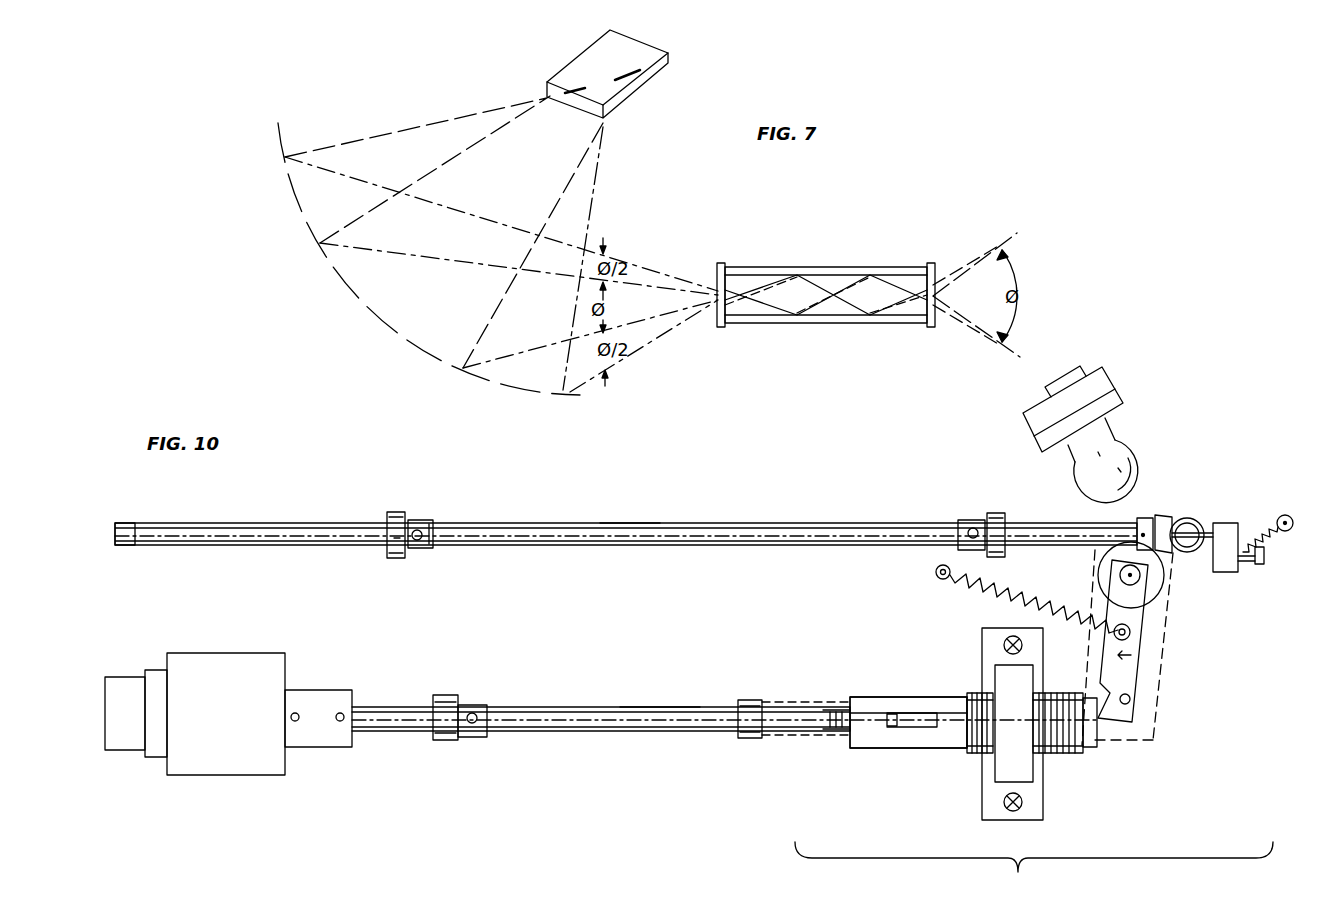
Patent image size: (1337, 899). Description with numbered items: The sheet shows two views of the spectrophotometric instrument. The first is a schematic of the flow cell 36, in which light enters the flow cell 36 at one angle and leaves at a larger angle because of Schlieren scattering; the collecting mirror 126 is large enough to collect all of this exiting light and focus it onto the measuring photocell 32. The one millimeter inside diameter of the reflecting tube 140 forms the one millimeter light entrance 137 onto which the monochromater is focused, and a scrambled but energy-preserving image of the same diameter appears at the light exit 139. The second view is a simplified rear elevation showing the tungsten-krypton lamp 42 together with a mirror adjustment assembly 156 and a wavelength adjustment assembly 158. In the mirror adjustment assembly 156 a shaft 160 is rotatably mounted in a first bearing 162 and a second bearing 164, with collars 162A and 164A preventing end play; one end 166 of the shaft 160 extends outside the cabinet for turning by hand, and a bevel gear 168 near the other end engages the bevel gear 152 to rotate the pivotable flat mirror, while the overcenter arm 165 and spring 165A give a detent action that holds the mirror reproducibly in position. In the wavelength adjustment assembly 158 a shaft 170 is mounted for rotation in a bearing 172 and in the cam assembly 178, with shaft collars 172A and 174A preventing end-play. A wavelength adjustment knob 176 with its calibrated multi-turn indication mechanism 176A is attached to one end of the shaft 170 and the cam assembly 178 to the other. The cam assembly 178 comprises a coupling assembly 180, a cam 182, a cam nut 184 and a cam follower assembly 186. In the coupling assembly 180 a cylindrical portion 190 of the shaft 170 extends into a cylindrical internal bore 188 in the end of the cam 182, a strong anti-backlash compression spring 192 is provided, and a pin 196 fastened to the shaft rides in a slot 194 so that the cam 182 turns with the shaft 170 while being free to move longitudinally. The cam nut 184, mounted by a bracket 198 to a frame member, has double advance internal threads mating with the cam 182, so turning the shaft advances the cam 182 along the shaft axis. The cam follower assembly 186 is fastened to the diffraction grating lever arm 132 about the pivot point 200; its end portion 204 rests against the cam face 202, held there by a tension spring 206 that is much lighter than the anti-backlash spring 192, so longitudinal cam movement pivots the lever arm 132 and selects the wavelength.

In FIG. 7, the measuring photocell 32 is at (677, 81).
In FIG. 7, the collecting mirror 126 is at (405, 340).
In FIG. 7, the flow cell 36 is at (848, 325).
In FIG. 7, the reflecting tube 140 is at (831, 267).
In FIG. 7, the light exit 139 is at (718, 272).
In FIG. 7, the light entrance 137 is at (935, 270).
In FIG. 10, the tungsten-krypton lamp 42 is at (1139, 460).
In FIG. 10, the end of shaft 166 is at (115, 527).
In FIG. 10, the first bearing 162 is at (393, 510).
In FIG. 10, the collar 162A is at (423, 519).
In FIG. 10, the mirror adjustment assembly 156 is at (628, 513).
In FIG. 10, the shaft 160 is at (713, 523).
In FIG. 10, the collar 164A is at (968, 518).
In FIG. 10, the second bearing 164 is at (1000, 513).
In FIG. 10, the bevel gear 168 is at (1150, 515).
In FIG. 10, the bevel gear 152 is at (1197, 520).
In FIG. 10, the spring 165A is at (1262, 522).
In FIG. 10, the overcenter arm 165 is at (1262, 565).
In FIG. 10, the tension spring 206 is at (1070, 593).
In FIG. 10, the pivot point 200 is at (1150, 582).
In FIG. 10, the diffraction grating lever arm 132 is at (1142, 652).
In FIG. 10, the cam follower assembly 186 is at (1145, 690).
In FIG. 10, the end portion of cam follower assembly 204 is at (1128, 722).
In FIG. 10, the cam face 202 is at (1102, 742).
In FIG. 10, the wavelength adjustment knob 176 is at (130, 682).
In FIG. 10, the calibrated multi-turn indication knob mechanism 176A is at (226, 765).
In FIG. 10, the bearing 172 is at (448, 741).
In FIG. 10, the shaft collar 172A is at (467, 698).
In FIG. 10, the wavelength adjustment assembly 158 is at (658, 691).
In FIG. 10, the shaft 170 is at (640, 728).
In FIG. 10, the shaft collar 174A is at (748, 739).
In FIG. 10, the anti-backlash compression spring 192 is at (790, 701).
In FIG. 10, the coupling assembly 180 is at (853, 690).
In FIG. 10, the cylindrical portion of shaft 190 is at (828, 711).
In FIG. 10, the slot 194 is at (930, 714).
In FIG. 10, the cylindrical internal bore 188 is at (849, 749).
In FIG. 10, the pin 196 is at (892, 729).
In FIG. 10, the cam nut 184 is at (1007, 762).
In FIG. 10, the cam 182 is at (1062, 770).
In FIG. 10, the bracket 198 is at (1035, 813).
In FIG. 10, the cam assembly 178 is at (1034, 869).